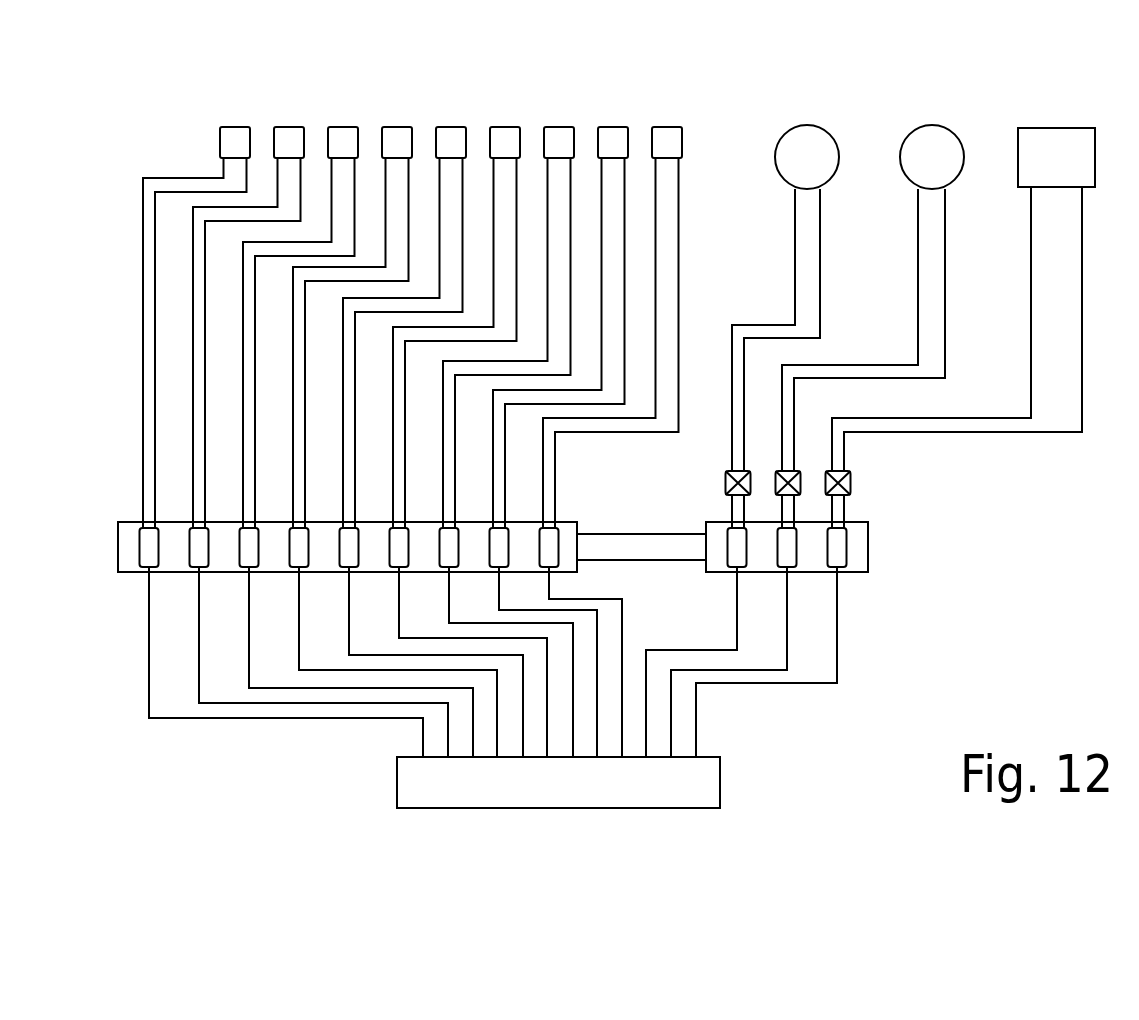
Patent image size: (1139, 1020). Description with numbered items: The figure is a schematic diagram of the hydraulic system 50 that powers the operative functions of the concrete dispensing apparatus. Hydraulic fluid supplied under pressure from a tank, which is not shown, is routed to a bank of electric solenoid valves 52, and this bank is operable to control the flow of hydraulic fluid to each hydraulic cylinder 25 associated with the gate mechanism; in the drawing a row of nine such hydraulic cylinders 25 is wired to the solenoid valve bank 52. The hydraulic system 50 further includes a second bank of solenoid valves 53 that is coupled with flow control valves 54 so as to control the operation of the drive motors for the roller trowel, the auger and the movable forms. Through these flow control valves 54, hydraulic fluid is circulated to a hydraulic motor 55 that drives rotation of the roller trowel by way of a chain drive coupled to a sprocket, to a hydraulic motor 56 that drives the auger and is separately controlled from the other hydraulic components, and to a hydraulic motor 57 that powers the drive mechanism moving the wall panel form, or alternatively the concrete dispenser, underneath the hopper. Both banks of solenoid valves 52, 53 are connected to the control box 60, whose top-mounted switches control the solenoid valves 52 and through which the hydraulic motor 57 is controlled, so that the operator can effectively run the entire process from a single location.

The hydraulic cylinder 25 is at (557, 70).
The hydraulic system 50 is at (1006, 596).
The bank of electric solenoid valves 52 is at (107, 550).
The bank of solenoid valves 53 is at (873, 550).
The flow control valves 54 is at (850, 479).
The hydraulic motor 55 is at (805, 142).
The hydraulic motor 56 is at (931, 142).
The hydraulic motor 57 is at (1065, 142).
The control box 60 is at (705, 787).